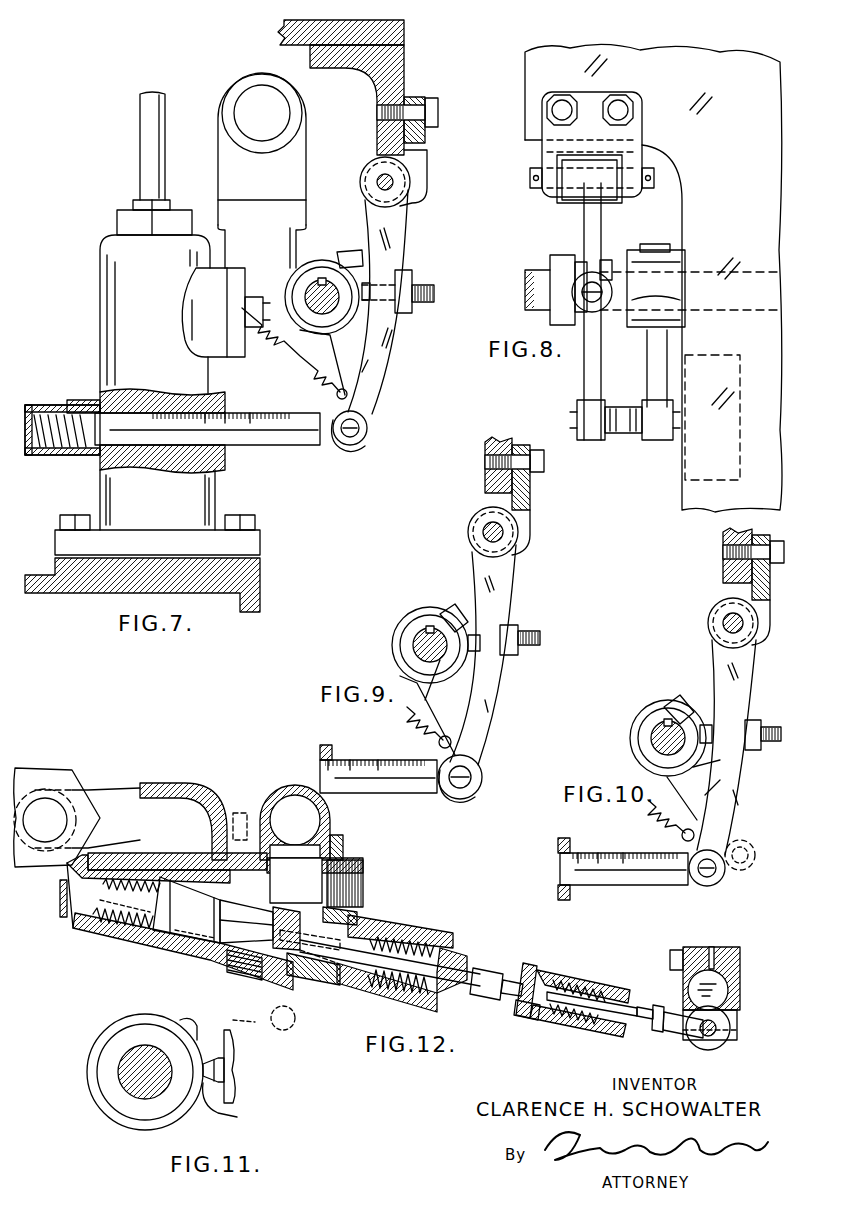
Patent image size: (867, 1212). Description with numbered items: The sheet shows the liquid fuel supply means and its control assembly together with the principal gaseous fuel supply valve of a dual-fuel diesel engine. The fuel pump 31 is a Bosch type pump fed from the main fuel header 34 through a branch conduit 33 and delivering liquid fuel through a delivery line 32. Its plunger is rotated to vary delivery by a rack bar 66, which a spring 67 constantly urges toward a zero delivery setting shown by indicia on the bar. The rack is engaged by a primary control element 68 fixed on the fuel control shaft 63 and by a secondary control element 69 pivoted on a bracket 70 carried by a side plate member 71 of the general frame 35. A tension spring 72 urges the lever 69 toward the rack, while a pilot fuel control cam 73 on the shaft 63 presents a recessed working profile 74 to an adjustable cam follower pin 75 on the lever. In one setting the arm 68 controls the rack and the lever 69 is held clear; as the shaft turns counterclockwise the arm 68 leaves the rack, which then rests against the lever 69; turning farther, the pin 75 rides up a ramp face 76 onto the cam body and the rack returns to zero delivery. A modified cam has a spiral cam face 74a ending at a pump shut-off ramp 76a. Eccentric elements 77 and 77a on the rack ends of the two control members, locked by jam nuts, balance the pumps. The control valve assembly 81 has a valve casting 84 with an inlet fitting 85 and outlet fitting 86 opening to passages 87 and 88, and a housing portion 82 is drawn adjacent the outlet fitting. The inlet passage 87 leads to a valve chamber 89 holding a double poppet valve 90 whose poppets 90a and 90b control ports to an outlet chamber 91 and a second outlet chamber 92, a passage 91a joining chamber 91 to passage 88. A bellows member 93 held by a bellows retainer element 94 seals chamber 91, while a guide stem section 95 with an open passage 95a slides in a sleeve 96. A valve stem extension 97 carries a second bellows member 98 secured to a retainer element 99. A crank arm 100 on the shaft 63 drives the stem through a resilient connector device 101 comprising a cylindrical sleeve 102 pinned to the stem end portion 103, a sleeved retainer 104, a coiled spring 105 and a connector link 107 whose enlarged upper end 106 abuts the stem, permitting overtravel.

In FIG. 7, the fuel pump 31 is at (125, 284).
In FIG. 7, the delivery line 32 is at (150, 137).
In FIG. 7, the branch conduit 33 is at (244, 291).
In FIG. 7, the main fuel header 34 is at (250, 85).
In FIG. 7, the general frame 35 is at (405, 30).
In FIG. 7, the fuel control shaft 63 is at (318, 290).
In FIG. 8, the fuel control shaft 63 is at (545, 285).
In FIG. 9, the fuel control shaft 63 is at (420, 645).
In FIG. 10, the fuel control shaft 63 is at (655, 740).
In FIG. 12, the fuel control shaft 63 is at (730, 992).
In FIG. 11, the fuel control shaft 63 is at (140, 1071).
In FIG. 7, the rack bar 66 is at (164, 446).
In FIG. 8, the rack bar 66 is at (624, 440).
In FIG. 9, the rack bar 66 is at (410, 793).
In FIG. 10, the rack bar 66 is at (650, 886).
In FIG. 7, the spring 67 is at (40, 455).
In FIG. 7, the primary control element 68 is at (332, 360).
In FIG. 8, the primary control element 68 is at (658, 350).
In FIG. 9, the primary control element 68 is at (455, 707).
In FIG. 10, the primary control element 68 is at (706, 772).
In FIG. 7, the secondary control element 69 is at (395, 343).
In FIG. 8, the secondary control element 69 is at (586, 370).
In FIG. 9, the secondary control element 69 is at (496, 681).
In FIG. 10, the secondary control element 69 is at (742, 780).
In FIG. 12, the secondary control element 69 is at (242, 1021).
In FIG. 11, the secondary control element 69 is at (232, 1033).
In FIG. 7, the bracket 70 is at (410, 178).
In FIG. 8, the bracket 70 is at (546, 148).
In FIG. 9, the bracket 70 is at (528, 500).
In FIG. 10, the bracket 70 is at (760, 622).
In FIG. 7, the side plate member 71 is at (405, 80).
In FIG. 8, the side plate member 71 is at (529, 76).
In FIG. 9, the side plate member 71 is at (495, 438).
In FIG. 10, the side plate member 71 is at (723, 541).
In FIG. 7, the tension spring 72 is at (302, 373).
In FIG. 9, the tension spring 72 is at (409, 728).
In FIG. 10, the tension spring 72 is at (653, 818).
In FIG. 7, the pilot fuel control cam 73 is at (325, 260).
In FIG. 8, the pilot fuel control cam 73 is at (596, 272).
In FIG. 9, the pilot fuel control cam 73 is at (405, 620).
In FIG. 10, the pilot fuel control cam 73 is at (642, 716).
In FIG. 11, the pilot fuel control cam 73 is at (118, 1016).
In FIG. 7, the working profile 74 is at (350, 250).
In FIG. 8, the working profile 74 is at (615, 264).
In FIG. 9, the working profile 74 is at (464, 612).
In FIG. 10, the working profile 74 is at (682, 695).
In FIG. 11, the cam face 74a is at (196, 1026).
In FIG. 7, the cam follower pin 75 is at (368, 292).
In FIG. 8, the cam follower pin 75 is at (581, 323).
In FIG. 9, the cam follower pin 75 is at (478, 642).
In FIG. 10, the cam follower pin 75 is at (722, 740).
In FIG. 11, the cam follower pin 75 is at (220, 1068).
In FIG. 7, the ramp face 76 is at (370, 304).
In FIG. 9, the ramp face 76 is at (490, 661).
In FIG. 10, the ramp face 76 is at (706, 722).
In FIG. 11, the pump shut-off ramp 76a is at (237, 1117).
In FIG. 7, the eccentric element 77 is at (342, 444).
In FIG. 8, the eccentric element 77 is at (650, 441).
In FIG. 9, the eccentric element 77 is at (482, 778).
In FIG. 10, the eccentric element 77 is at (754, 862).
In FIG. 7, the eccentric element 77a is at (366, 446).
In FIG. 8, the eccentric element 77a is at (593, 442).
In FIG. 9, the eccentric element 77a is at (457, 800).
In FIG. 10, the eccentric element 77a is at (704, 886).
In FIG. 12, the control valve assembly 81 is at (200, 775).
In FIG. 12, the housing 82 is at (292, 785).
In FIG. 12, the valve casting 84 is at (305, 978).
In FIG. 12, the inlet fitting 85 is at (222, 818).
In FIG. 12, the outlet fitting 86 is at (344, 838).
In FIG. 12, the inlet passage 87 is at (186, 870).
In FIG. 12, the outlet passage 88 is at (292, 892).
In FIG. 12, the valve chamber 89 is at (180, 938).
In FIG. 12, the double poppet valve 90 is at (200, 945).
In FIG. 12, the poppet 90a is at (132, 925).
In FIG. 12, the poppet 90b is at (217, 932).
In FIG. 12, the outlet chamber 91 is at (105, 940).
In FIG. 12, the passage 91a is at (238, 826).
In FIG. 12, the second outlet chamber 92 is at (262, 980).
In FIG. 12, the bellows member 93 is at (126, 903).
In FIG. 12, the bellows retainer element 94 is at (60, 905).
In FIG. 12, the guide stem section 95 is at (357, 923).
In FIG. 12, the open passage 95a is at (284, 1018).
In FIG. 12, the sleeve 96 is at (330, 965).
In FIG. 12, the valve stem extension 97 is at (488, 970).
In FIG. 12, the second bellows member 98 is at (420, 930).
In FIG. 12, the retainer element 99 is at (453, 948).
In FIG. 12, the crank arm 100 is at (740, 1010).
In FIG. 12, the resilient connector device 101 is at (598, 965).
In FIG. 12, the cylindrical sleeve 102 is at (550, 975).
In FIG. 12, the end portion 103 is at (522, 965).
In FIG. 12, the sleeved retainer 104 is at (620, 1033).
In FIG. 12, the coiled spring 105 is at (572, 975).
In FIG. 12, the enlarged upper end 106 is at (527, 1018).
In FIG. 12, the connector link 107 is at (648, 1008).